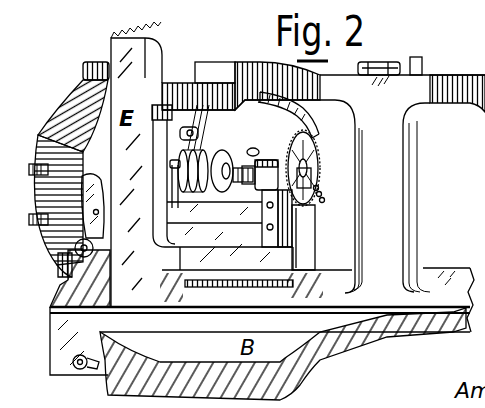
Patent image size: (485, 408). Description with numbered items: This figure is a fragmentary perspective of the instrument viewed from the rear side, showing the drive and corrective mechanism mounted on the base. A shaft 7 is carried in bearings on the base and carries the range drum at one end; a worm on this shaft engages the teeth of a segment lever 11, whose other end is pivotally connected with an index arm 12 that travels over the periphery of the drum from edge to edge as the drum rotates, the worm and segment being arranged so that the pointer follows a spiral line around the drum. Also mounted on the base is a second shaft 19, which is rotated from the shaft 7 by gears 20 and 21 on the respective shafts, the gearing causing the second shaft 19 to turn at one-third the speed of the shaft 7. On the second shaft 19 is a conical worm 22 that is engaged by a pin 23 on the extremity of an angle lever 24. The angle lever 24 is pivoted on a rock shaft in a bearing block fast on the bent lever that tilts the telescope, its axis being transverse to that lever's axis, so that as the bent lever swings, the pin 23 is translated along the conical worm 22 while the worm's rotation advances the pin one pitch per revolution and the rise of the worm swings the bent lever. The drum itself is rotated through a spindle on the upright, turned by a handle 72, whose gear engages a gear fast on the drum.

The pin 23 is at (182, 100).
The angle lever 24 is at (235, 122).
The conical worm 22 is at (200, 150).
The segment lever 11 is at (278, 133).
The index arm 12 is at (308, 130).
The gear 20 is at (308, 155).
The second shaft 19 is at (308, 172).
The gear 21 is at (310, 178).
The shaft 7 is at (322, 198).
The handle 72 is at (64, 262).